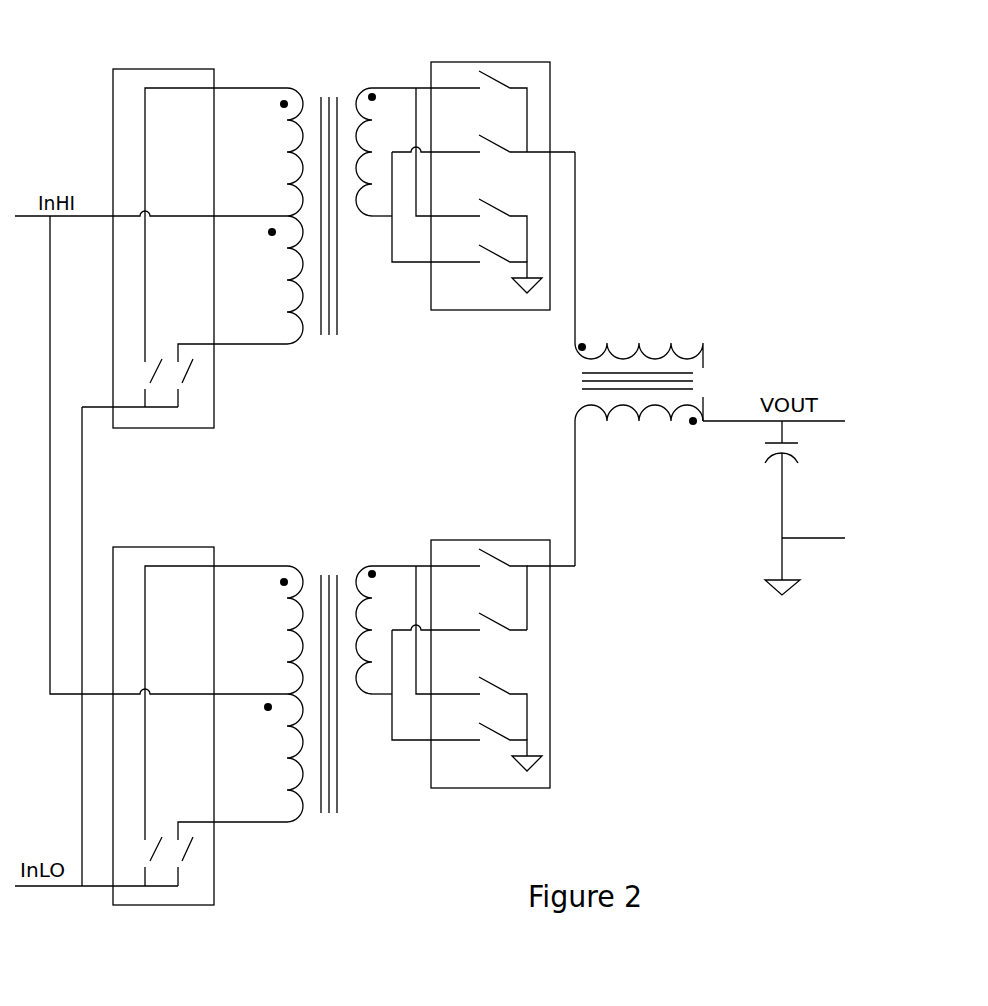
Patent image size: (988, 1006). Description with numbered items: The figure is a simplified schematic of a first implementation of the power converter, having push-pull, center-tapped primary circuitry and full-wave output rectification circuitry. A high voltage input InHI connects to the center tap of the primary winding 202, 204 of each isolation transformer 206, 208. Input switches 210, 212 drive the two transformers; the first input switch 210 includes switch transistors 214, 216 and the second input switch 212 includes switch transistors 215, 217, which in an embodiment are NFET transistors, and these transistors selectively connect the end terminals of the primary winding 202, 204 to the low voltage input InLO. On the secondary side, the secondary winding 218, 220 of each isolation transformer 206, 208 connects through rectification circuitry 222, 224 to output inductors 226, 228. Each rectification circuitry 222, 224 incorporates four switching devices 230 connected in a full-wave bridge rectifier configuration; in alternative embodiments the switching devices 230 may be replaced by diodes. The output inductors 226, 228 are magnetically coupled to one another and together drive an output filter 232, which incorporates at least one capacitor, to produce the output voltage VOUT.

The primary winding 202 is at (302, 220).
The primary winding 204 is at (300, 700).
The isolation transformer 206 is at (340, 83).
The isolation transformer 208 is at (340, 562).
The input switch 210 is at (140, 70).
The input switch 212 is at (140, 548).
The switch transistor 214 is at (185, 378).
The switch transistor 215 is at (185, 856).
The switch transistor 216 is at (155, 388).
The switch transistor 217 is at (148, 866).
The secondary winding 218 is at (360, 694).
The secondary winding 220 is at (360, 216).
The rectification circuitry 222 is at (527, 214).
The rectification circuitry 224 is at (433, 788).
The output inductor 226 is at (638, 343).
The output inductor 228 is at (607, 421).
The switching device 230 is at (503, 80).
The output filter 232 is at (765, 452).